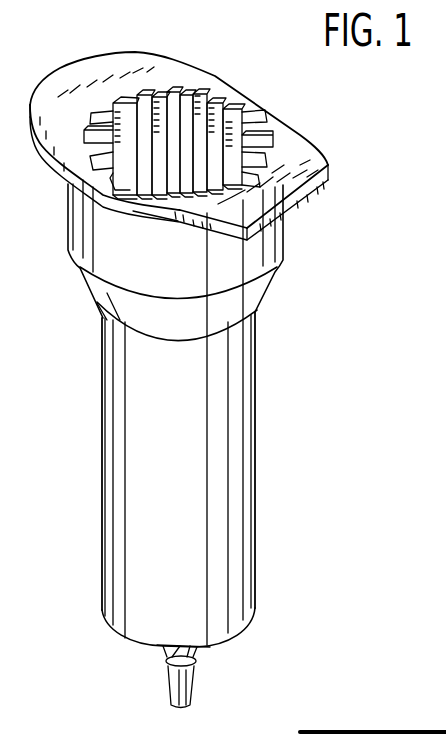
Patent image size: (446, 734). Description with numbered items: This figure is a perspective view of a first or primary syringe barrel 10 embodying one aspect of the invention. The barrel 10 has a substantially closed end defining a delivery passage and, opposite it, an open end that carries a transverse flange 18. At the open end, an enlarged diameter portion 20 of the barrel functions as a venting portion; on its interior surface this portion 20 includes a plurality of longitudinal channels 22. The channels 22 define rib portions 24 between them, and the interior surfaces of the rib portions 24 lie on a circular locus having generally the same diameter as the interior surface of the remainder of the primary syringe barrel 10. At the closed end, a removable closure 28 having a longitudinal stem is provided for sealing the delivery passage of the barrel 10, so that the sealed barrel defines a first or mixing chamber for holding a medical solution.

The primary syringe barrel 10 is at (268, 423).
The transverse flange 18 is at (313, 158).
The enlarged diameter portion 20 is at (252, 260).
The longitudinal channel 22 is at (239, 108).
The rib portion 24 is at (262, 107).
The removable closure 28 is at (196, 686).